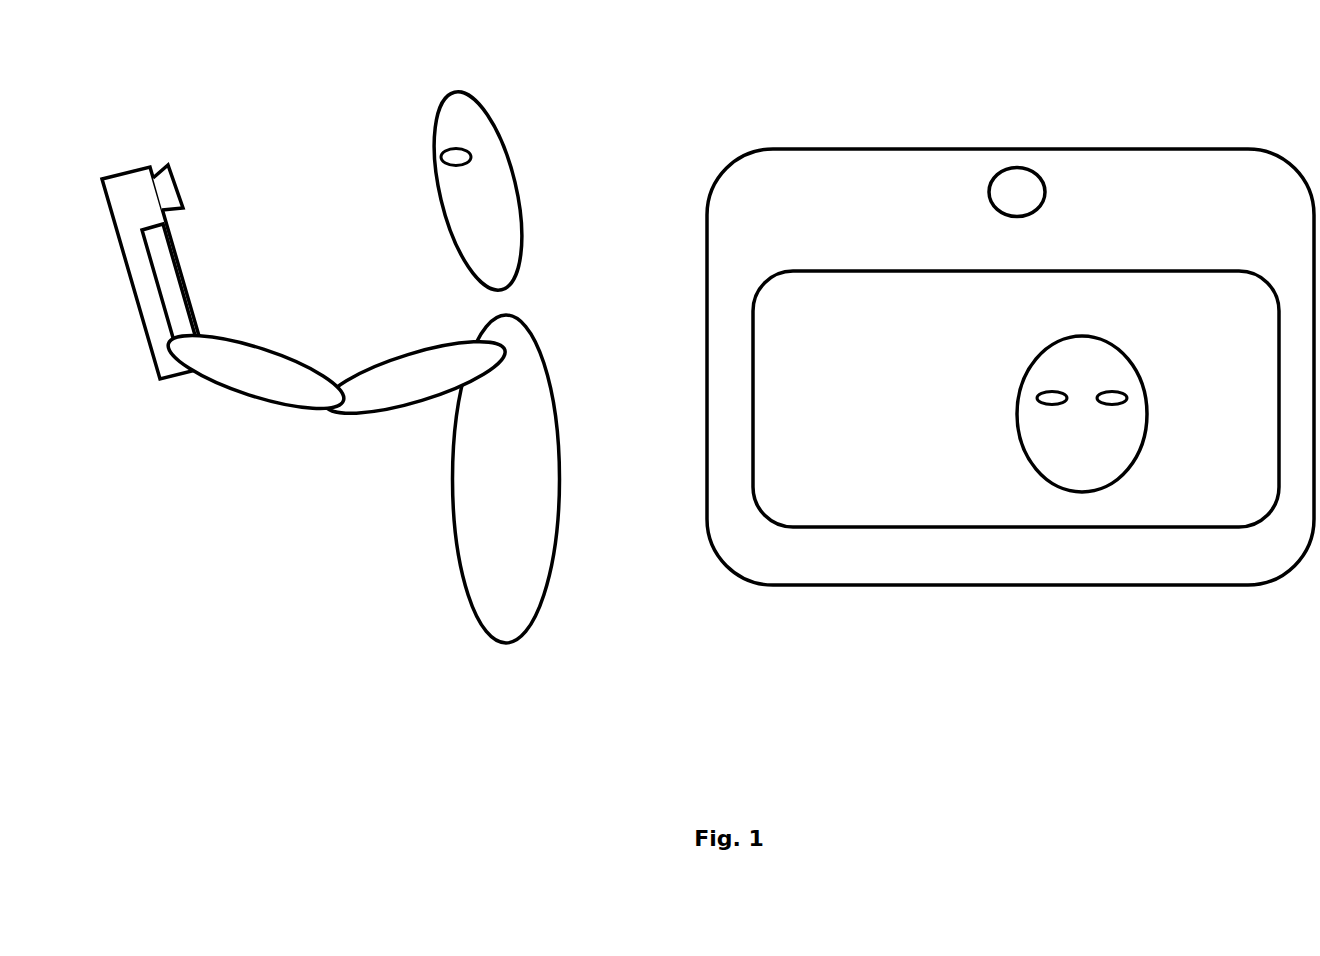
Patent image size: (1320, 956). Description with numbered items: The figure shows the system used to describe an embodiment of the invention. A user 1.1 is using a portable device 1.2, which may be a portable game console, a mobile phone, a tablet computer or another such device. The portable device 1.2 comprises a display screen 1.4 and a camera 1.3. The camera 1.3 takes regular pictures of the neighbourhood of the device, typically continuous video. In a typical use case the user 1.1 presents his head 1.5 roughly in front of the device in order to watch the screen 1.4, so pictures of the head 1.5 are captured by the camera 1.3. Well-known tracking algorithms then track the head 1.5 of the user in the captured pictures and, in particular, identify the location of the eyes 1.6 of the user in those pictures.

The user 1.1 is at (547, 353).
The portable device 1.2 is at (127, 168).
The camera 1.3 is at (155, 178).
The display screen 1.4 is at (178, 263).
The head 1.5 is at (485, 108).
The eyes 1.6 is at (1055, 388).